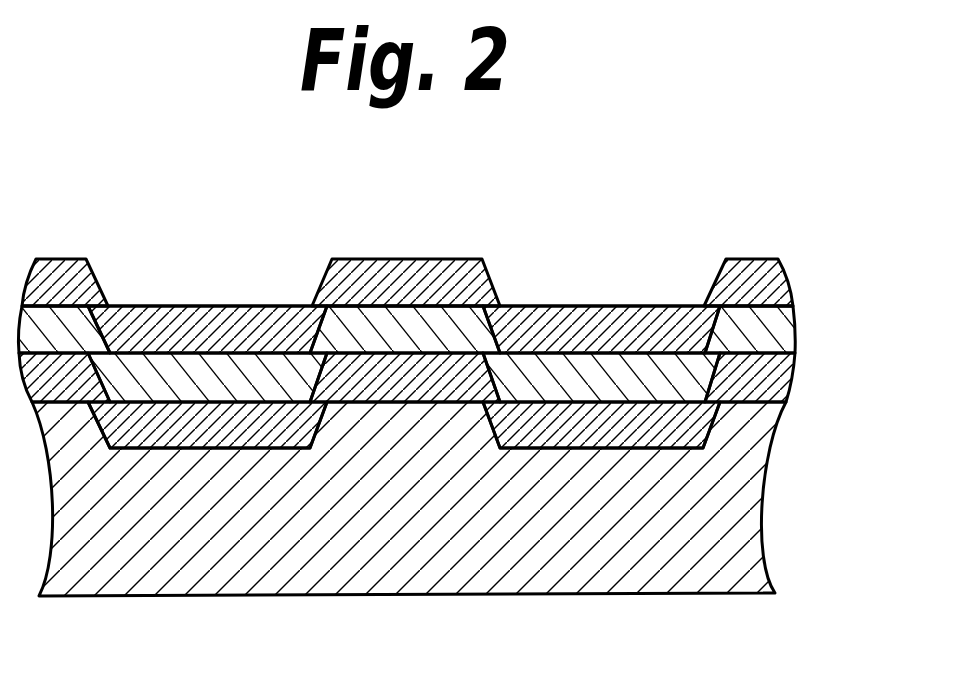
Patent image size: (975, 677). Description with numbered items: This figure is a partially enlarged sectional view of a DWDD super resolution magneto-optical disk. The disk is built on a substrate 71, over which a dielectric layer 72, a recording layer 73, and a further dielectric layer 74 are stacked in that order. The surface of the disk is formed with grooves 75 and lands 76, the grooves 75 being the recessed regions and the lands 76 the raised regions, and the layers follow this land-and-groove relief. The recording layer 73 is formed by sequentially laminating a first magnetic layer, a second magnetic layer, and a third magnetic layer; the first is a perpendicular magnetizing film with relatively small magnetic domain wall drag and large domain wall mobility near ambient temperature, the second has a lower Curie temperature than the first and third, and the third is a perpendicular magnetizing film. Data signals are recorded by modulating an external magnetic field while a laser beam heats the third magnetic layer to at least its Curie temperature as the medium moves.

The substrate 71 is at (762, 490).
The dielectric layer 72 is at (793, 370).
The recording layer 73 is at (797, 323).
The dielectric layer 74 is at (462, 238).
The groove 75 is at (205, 306).
The land 76 is at (68, 259).